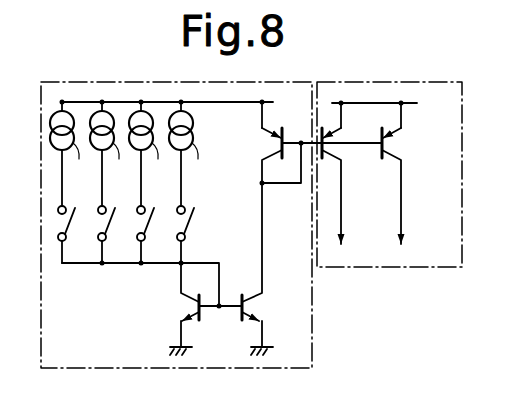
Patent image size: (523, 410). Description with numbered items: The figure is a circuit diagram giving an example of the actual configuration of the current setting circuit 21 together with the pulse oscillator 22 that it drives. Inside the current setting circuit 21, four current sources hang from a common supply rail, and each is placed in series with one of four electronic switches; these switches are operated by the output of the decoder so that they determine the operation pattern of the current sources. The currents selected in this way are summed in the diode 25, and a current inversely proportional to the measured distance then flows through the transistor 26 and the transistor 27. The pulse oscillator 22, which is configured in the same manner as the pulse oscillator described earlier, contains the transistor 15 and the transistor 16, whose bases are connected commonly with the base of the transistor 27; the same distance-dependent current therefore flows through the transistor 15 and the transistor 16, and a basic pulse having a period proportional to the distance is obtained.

The current setting circuit 21 is at (312, 305).
The pulse oscillator 22 is at (424, 267).
The transistor Q15 15 is at (350, 173).
The transistor Q16 16 is at (409, 173).
The diode Q25 25 is at (189, 320).
The transistor Q26 26 is at (256, 296).
The transistor Q27 27 is at (270, 153).